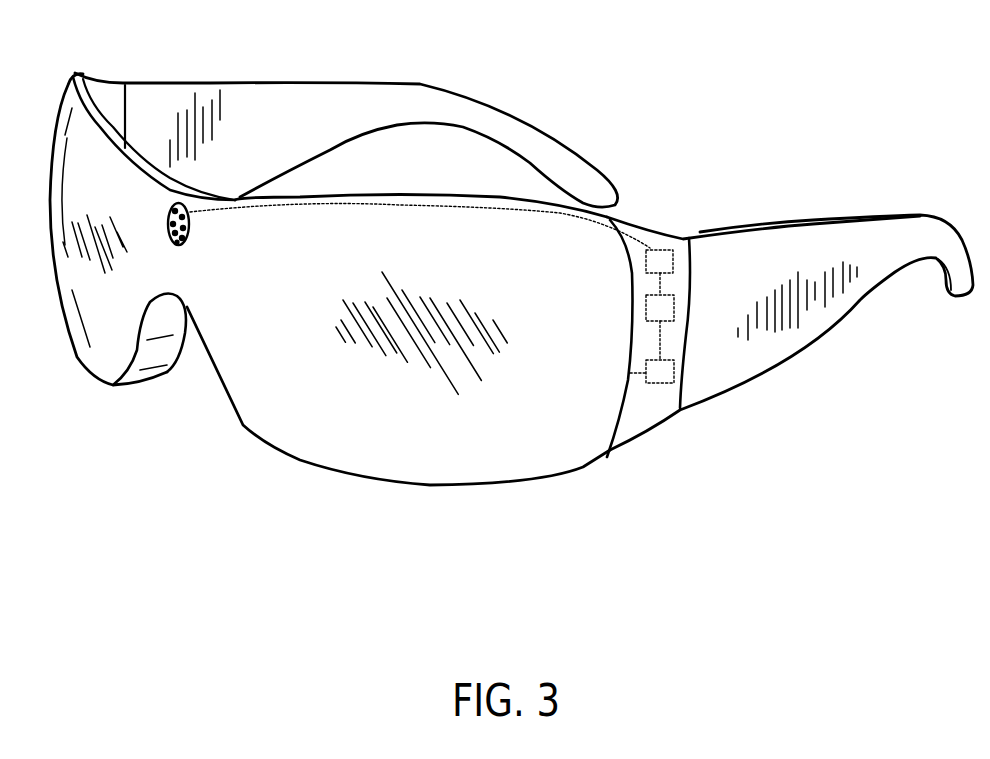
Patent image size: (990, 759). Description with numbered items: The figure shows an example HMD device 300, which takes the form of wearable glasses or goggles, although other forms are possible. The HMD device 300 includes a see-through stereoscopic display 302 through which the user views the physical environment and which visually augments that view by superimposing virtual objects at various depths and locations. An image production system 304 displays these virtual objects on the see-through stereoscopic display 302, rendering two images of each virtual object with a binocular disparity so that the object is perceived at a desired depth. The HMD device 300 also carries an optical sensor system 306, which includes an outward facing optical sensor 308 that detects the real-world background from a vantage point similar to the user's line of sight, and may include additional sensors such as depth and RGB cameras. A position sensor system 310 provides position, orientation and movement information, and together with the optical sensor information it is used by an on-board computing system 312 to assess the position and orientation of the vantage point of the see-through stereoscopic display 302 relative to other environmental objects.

The HMD device 300 is at (593, 58).
The see-through stereoscopic display 302 is at (370, 382).
The image production system 304 is at (660, 372).
The optical sensor system 306 is at (196, 186).
The outward facing optical sensor 308 is at (180, 245).
The position sensor system 310 is at (665, 306).
The on-board computing system 312 is at (663, 260).